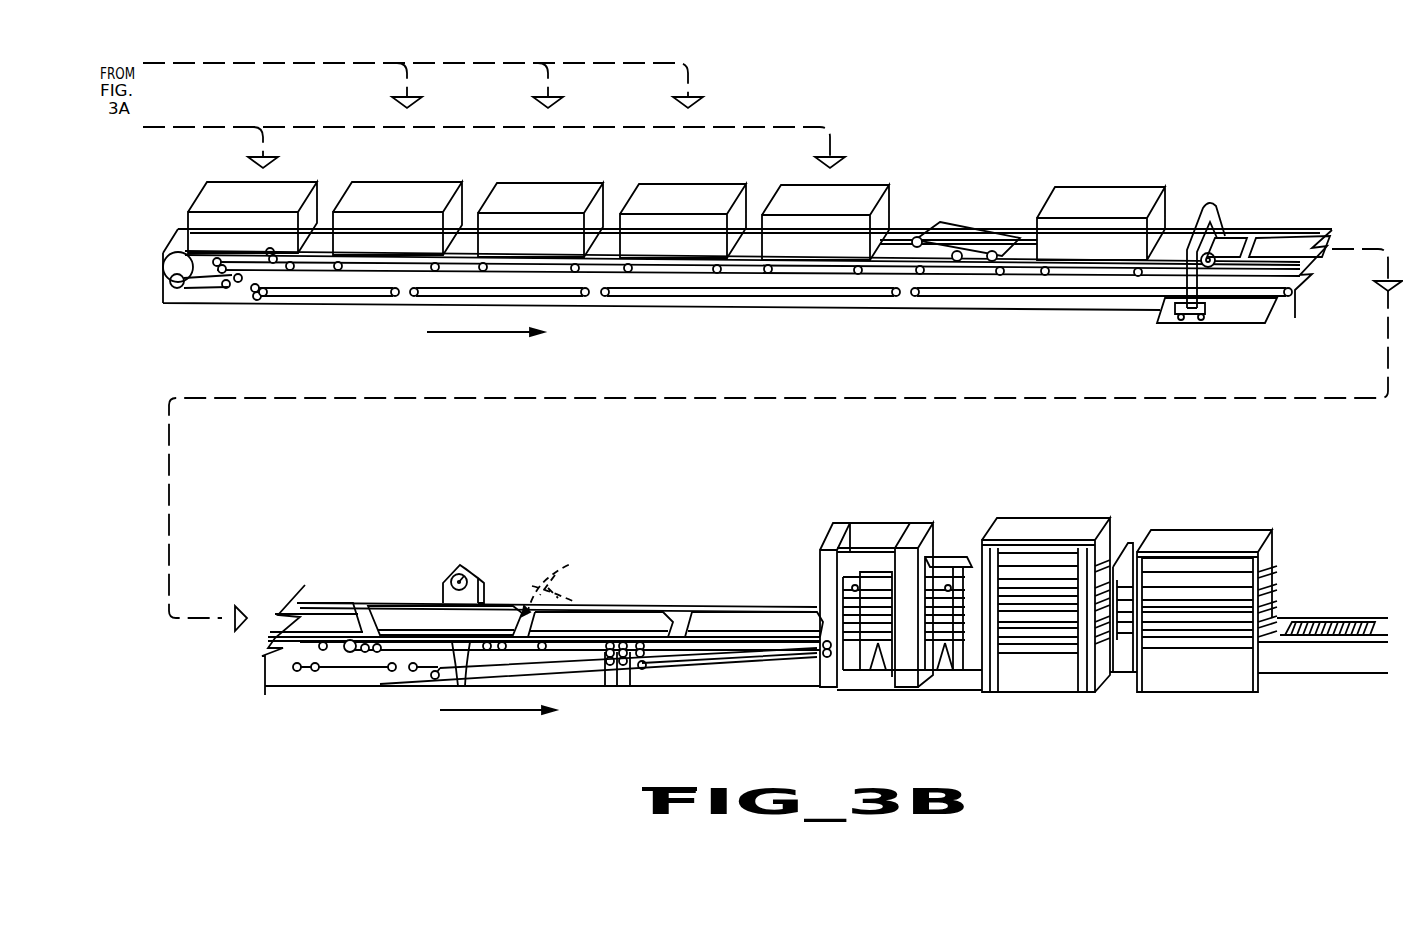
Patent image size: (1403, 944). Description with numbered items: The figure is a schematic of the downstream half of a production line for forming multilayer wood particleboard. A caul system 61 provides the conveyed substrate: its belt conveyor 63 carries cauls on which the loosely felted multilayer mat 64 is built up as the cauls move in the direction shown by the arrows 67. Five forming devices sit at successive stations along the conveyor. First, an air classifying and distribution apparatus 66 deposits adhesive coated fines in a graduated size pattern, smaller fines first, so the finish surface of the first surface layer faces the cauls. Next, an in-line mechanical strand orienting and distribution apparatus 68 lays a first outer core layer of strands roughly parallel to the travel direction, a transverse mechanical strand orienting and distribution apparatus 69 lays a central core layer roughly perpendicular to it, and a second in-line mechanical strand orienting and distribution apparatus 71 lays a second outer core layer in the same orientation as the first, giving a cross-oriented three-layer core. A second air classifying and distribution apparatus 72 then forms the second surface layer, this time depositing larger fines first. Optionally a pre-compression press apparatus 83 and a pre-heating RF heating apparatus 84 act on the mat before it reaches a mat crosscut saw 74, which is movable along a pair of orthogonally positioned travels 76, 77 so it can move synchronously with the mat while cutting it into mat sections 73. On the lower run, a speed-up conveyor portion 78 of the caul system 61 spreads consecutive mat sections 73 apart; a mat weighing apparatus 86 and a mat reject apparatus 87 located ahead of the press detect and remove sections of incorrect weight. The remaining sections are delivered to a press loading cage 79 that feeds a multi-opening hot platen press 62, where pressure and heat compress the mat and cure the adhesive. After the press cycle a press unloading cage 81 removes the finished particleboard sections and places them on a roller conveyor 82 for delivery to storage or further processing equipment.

The caul system 61 is at (197, 291).
The press 62 is at (1052, 518).
The belt conveyor 63 is at (900, 228).
The loosely felted multilayer mat 64 is at (903, 242).
The air classifying and distribution apparatus 66 is at (285, 182).
The arrows 67 is at (482, 333).
The in-line mechanical strand orienting and distribution apparatus 68 is at (410, 182).
The transverse mechanical strand orienting and distribution apparatus 69 is at (550, 185).
The second in-line mechanical strand orienting and distribution apparatus 71 is at (703, 185).
The air classifying and distribution apparatus 72 is at (856, 186).
The mat sections 73 is at (1268, 242).
The mat crosscut saw 74 is at (1222, 238).
The travel 76 is at (1238, 315).
The travel 77 is at (1202, 226).
The speed-up conveyor portion 78 is at (415, 604).
The press loading cage 79 is at (848, 526).
The press unloading cage 81 is at (1215, 530).
The roller conveyor 82 is at (1333, 620).
The pre-compression press apparatus 83 is at (980, 235).
The pre-heating RF heating apparatus 84 is at (1123, 190).
The mat weighing apparatus 86 is at (468, 567).
The mat reject apparatus 87 is at (558, 582).